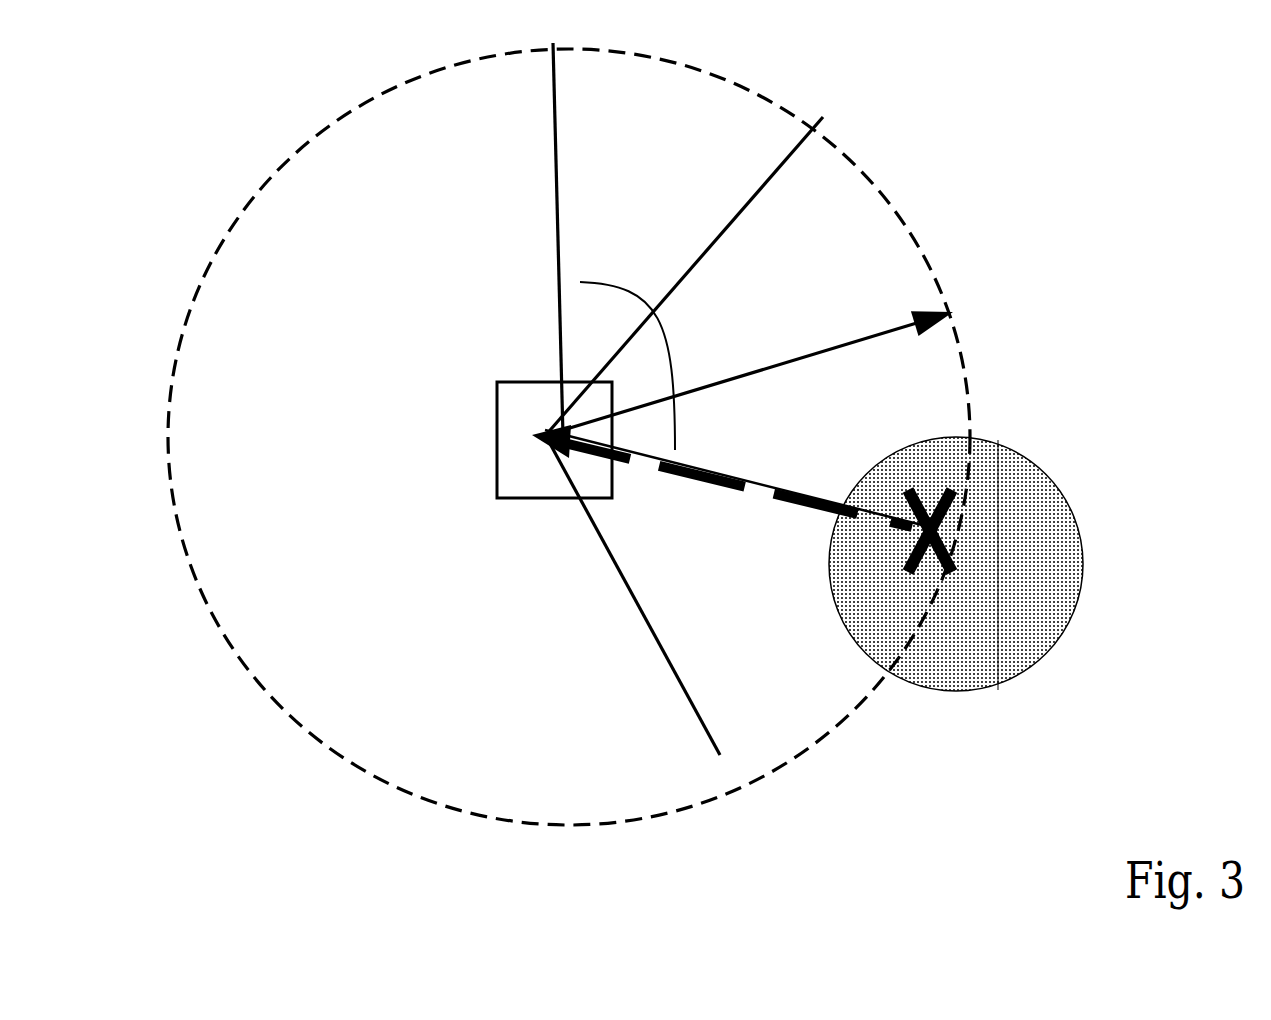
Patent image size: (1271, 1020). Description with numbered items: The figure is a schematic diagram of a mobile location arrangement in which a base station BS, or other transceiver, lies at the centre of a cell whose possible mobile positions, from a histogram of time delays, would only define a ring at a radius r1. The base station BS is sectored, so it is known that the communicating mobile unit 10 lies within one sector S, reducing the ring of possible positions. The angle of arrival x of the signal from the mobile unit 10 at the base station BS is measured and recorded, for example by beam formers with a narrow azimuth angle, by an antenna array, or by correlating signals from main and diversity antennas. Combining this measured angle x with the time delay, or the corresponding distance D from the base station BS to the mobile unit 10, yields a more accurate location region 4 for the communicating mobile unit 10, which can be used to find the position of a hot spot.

The mobile unit 10 is at (938, 522).
The location region 4 is at (1092, 560).
The base station BS is at (458, 454).
The sector S is at (745, 144).
The distance D is at (753, 548).
The radius r1 is at (751, 369).
The angle of arrival x is at (625, 268).